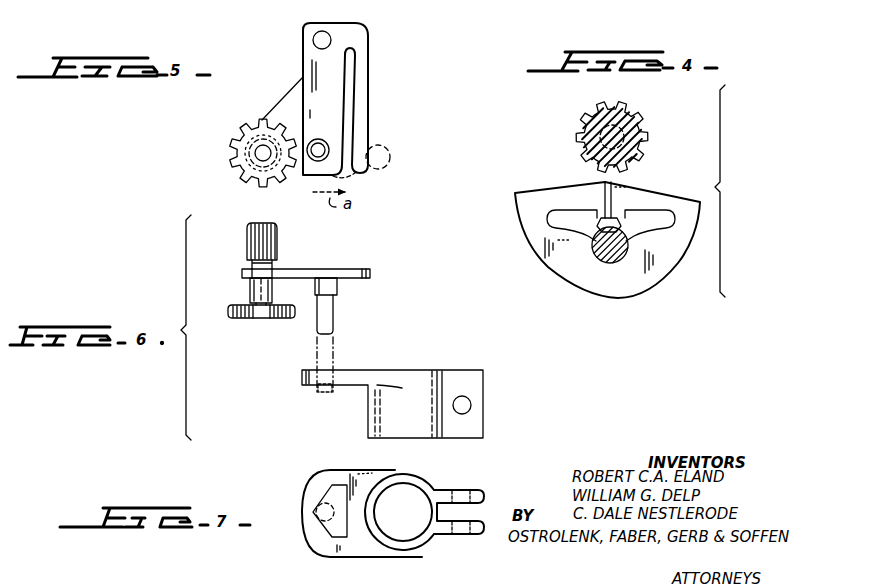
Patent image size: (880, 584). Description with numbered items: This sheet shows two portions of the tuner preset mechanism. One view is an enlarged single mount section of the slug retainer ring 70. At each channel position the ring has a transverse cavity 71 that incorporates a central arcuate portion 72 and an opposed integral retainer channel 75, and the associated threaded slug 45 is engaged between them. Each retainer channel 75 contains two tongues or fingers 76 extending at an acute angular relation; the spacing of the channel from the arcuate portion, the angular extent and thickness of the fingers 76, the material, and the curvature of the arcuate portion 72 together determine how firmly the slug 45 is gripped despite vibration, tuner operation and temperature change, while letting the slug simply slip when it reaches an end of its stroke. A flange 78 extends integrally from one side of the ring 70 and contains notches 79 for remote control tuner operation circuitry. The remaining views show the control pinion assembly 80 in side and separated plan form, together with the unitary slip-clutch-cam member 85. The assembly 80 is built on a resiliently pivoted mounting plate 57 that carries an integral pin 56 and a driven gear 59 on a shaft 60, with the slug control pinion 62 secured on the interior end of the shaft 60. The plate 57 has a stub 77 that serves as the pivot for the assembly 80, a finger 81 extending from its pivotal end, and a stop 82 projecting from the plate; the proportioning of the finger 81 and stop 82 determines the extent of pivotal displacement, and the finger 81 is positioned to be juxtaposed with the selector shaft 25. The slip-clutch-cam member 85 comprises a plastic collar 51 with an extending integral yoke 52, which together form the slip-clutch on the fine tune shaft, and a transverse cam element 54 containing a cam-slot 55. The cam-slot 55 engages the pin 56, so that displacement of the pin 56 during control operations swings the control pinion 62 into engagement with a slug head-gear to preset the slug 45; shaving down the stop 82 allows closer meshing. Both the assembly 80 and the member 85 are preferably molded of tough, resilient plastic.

In FIG. 5, the selector shaft 25 is at (392, 152).
In FIG. 4, the threaded slug 45 is at (608, 258).
In FIG. 7, the collar 51 is at (422, 552).
In FIG. 6, the yoke 52 is at (468, 388).
In FIG. 7, the yoke 52 is at (468, 490).
In FIG. 6, the cam element 54 is at (323, 380).
In FIG. 7, the cam element 54 is at (308, 535).
In FIG. 7, the cam-slot 55 is at (337, 493).
In FIG. 5, the pin 56 is at (320, 143).
In FIG. 6, the pin 56 is at (335, 320).
In FIG. 7, the pin 56 is at (313, 511).
In FIG. 5, the plate 57 is at (297, 98).
In FIG. 6, the plate 57 is at (285, 273).
In FIG. 5, the driven gear 59 is at (233, 135).
In FIG. 6, the driven gear 59 is at (255, 318).
In FIG. 5, the shaft 60 is at (258, 155).
In FIG. 6, the shaft 60 is at (252, 292).
In FIG. 4, the shaft 60 is at (649, 135).
In FIG. 6, the slug control pinion 62 is at (277, 244).
In FIG. 4, the slug control pinion 62 is at (628, 124).
In FIG. 4, the slug retainer ring 70 is at (556, 281).
In FIG. 4, the transverse cavity 71 is at (547, 227).
In FIG. 4, the central arcuate portion 72 is at (603, 258).
In FIG. 4, the retainer channel 75 is at (616, 211).
In FIG. 4, the fingers 76 is at (597, 222).
In FIG. 5, the stub 77 is at (313, 41).
In FIG. 6, the stub 77 is at (337, 287).
In FIG. 4, the flange 78 is at (664, 192).
In FIG. 4, the notches 79 is at (611, 183).
In FIG. 5, the control pinion assembly 80 is at (277, 95).
In FIG. 6, the control pinion assembly 80 is at (333, 265).
In FIG. 5, the finger 81 is at (362, 123).
In FIG. 5, the stop 82 is at (337, 152).
In FIG. 6, the slip-clutch-cam member 85 is at (426, 366).
In FIG. 7, the slip-clutch-cam member 85 is at (418, 474).